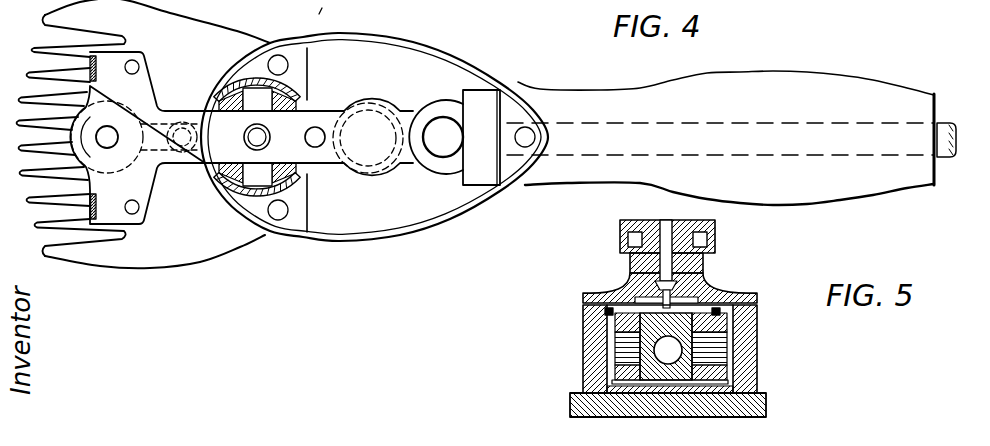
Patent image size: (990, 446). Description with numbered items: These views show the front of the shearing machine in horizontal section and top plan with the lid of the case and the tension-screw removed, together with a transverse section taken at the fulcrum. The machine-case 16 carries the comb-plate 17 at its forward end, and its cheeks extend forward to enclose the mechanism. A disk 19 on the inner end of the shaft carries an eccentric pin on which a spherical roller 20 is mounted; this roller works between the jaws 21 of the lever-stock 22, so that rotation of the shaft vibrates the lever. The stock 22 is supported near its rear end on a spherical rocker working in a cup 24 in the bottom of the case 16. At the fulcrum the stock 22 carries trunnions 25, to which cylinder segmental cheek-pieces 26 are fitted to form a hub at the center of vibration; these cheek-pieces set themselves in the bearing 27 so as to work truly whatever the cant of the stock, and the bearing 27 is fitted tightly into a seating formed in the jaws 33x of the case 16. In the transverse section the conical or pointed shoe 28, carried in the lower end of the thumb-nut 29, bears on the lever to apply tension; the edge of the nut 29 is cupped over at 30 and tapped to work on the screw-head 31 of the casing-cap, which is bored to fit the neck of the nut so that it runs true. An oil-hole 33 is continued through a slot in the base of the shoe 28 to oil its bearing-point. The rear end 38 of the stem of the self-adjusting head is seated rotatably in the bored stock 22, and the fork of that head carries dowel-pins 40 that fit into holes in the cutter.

In FIG. 4, the machine-case 16 is at (436, 50).
In FIG. 4, the comb-plate 17 is at (144, 134).
In FIG. 4, the disk 19 is at (481, 137).
In FIG. 4, the spherical roller 20 is at (443, 137).
In FIG. 4, the jaws 21 is at (427, 166).
In FIG. 4, the lever-stock 22 is at (328, 164).
In FIG. 5, the lever-stock 22 is at (582, 332).
In FIG. 4, the cup 24 is at (394, 0).
In FIG. 4, the trunnions 25 is at (257, 137).
In FIG. 5, the trunnions 25 is at (760, 338).
In FIG. 4, the cylinder segmental cheek-pieces 26 is at (309, 103).
In FIG. 5, the cylinder segmental cheek-pieces 26 is at (747, 318).
In FIG. 5, the bearing 27 is at (758, 363).
In FIG. 5, the conical or pointed shoe 28 is at (682, 304).
In FIG. 5, the thumb-nut 29 is at (630, 218).
In FIG. 5, the cupped-over edge 30 is at (715, 237).
In FIG. 5, the screw-head 31 is at (706, 261).
In FIG. 5, the oil-hole 33 is at (673, 219).
In FIG. 4, the jaws of the case 33x is at (308, 67).
In FIG. 4, the rear end of the stem 38 is at (332, 8).
In FIG. 4, the dowel-pins 40 is at (139, 67).